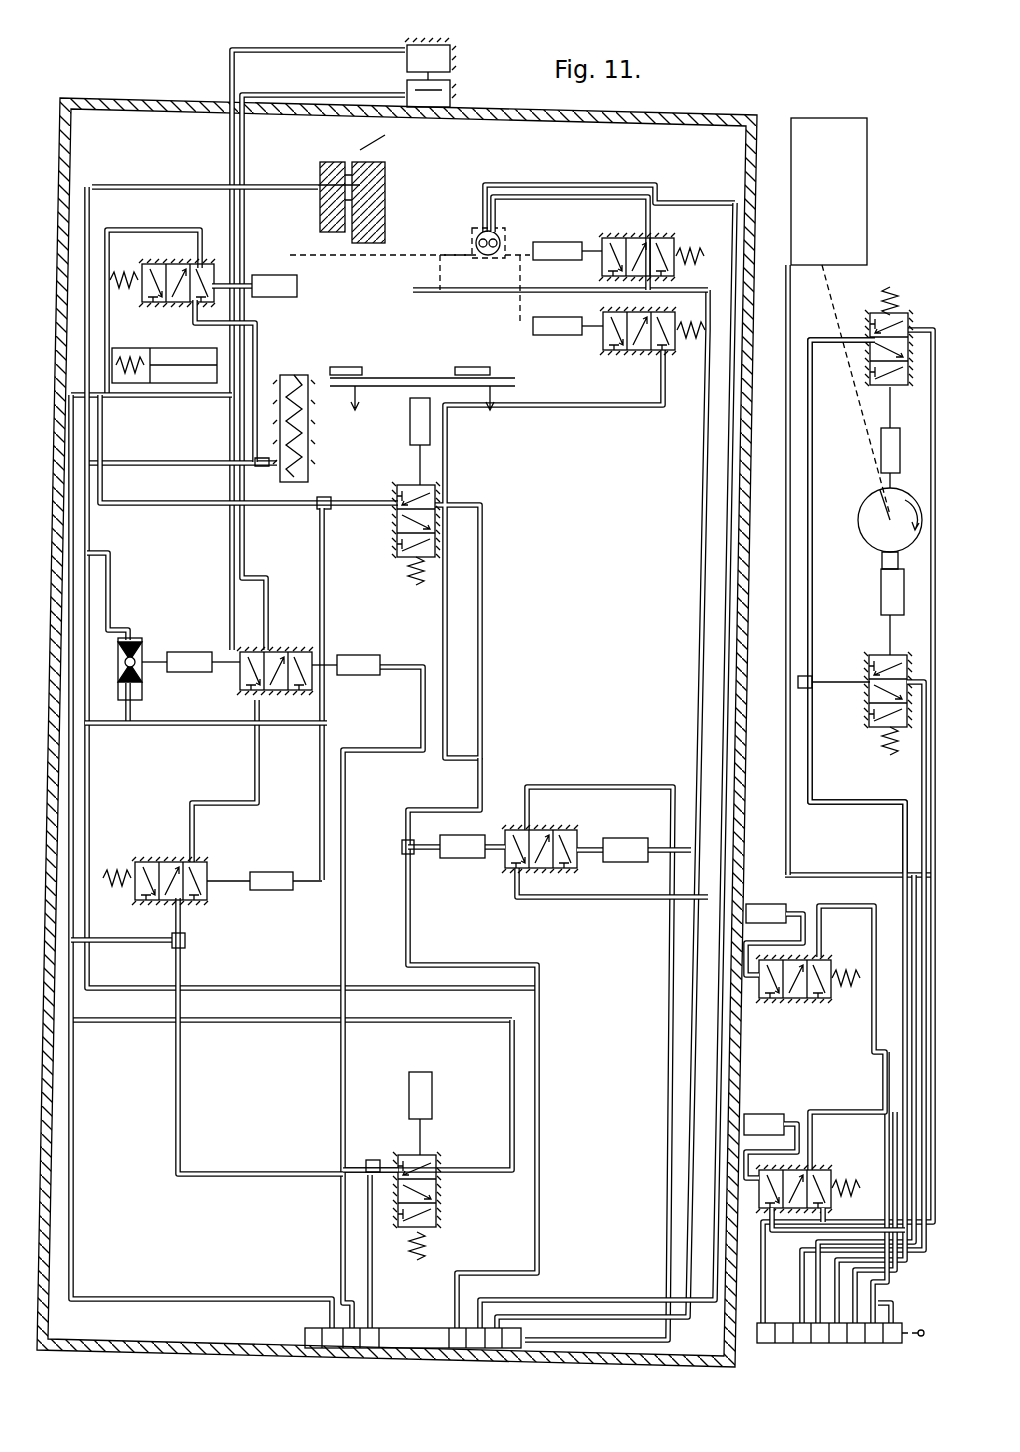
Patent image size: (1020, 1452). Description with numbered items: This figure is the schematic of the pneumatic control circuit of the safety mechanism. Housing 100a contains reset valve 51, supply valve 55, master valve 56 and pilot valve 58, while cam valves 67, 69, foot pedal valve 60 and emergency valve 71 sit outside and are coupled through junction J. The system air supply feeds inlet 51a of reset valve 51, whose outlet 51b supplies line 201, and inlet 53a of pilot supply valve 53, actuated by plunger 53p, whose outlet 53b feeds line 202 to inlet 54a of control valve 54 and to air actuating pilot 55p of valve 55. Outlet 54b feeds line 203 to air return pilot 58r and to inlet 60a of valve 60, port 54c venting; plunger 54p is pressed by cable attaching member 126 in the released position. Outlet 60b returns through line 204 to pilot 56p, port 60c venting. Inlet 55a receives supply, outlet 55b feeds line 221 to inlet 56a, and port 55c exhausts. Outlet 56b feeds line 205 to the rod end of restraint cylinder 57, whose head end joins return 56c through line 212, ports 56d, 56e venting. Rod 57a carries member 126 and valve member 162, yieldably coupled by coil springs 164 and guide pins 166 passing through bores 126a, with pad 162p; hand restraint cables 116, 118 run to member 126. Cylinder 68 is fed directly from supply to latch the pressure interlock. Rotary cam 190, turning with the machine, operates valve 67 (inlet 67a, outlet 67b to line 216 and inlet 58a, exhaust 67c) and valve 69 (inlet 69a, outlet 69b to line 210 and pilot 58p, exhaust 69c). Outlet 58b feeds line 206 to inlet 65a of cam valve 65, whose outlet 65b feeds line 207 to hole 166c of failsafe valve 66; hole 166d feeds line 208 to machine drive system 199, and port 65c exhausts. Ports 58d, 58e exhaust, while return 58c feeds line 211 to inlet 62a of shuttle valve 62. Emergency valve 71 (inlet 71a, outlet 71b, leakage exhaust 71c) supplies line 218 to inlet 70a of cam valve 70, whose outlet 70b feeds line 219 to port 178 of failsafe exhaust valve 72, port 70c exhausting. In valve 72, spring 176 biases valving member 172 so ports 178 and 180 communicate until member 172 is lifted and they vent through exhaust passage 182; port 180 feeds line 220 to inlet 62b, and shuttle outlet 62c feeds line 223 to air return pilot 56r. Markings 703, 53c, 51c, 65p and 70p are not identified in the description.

The housing 100a is at (120, 100).
The line 212 is at (290, 48).
The line 205 is at (268, 580).
The line 220 is at (128, 723).
The line 202 is at (322, 510).
The line 201 is at (440, 1030).
The line 223 is at (130, 650).
The line 211 is at (545, 960).
The line 204 is at (845, 906).
The line 221 is at (258, 790).
The line 218 is at (870, 1060).
The line 203 is at (830, 1050).
The line 216 is at (530, 1320).
The line 210 is at (605, 1320).
The line 207 is at (615, 185).
The line 208 is at (560, 1295).
The line 206 is at (590, 897).
The conduit 703 is at (760, 285).
The machine drive system 199 is at (860, 118).
The port 69c is at (862, 410).
The restraint cylinder 57 is at (452, 62).
The rod 57a is at (190, 360).
The pilot supply valve 53 is at (190, 265).
The inlet 53a is at (170, 360).
The outlet 53b is at (195, 266).
The valve port 53c is at (215, 300).
The plunger 53p is at (292, 275).
The failsafe exhaust valve 72 is at (320, 230).
The exhaust passage 182 is at (325, 162).
The valving member 172 is at (355, 165).
The spring 176 is at (360, 150).
The port 178 is at (375, 180).
The port 180 is at (320, 175).
The guide pin 166 is at (478, 235).
The hole 166c is at (484, 215).
The hole 166d is at (495, 230).
The failsafe valve 66 is at (500, 238).
The line 219 is at (510, 262).
The cable attaching member 126 is at (455, 292).
The bore 126a is at (515, 380).
The cam valve 65 is at (630, 238).
The cam pilot 65p is at (560, 242).
The inlet 65a is at (675, 262).
The outlet 65b is at (660, 238).
The port 65c is at (615, 276).
The cam valve 70 is at (678, 348).
The cam pilot 70p is at (565, 336).
The inlet 70a is at (655, 352).
The outlet 70b is at (660, 312).
The port 70c is at (635, 350).
The cylinder 68 is at (300, 372).
The valve member 162 is at (360, 350).
The coil spring 164 is at (370, 367).
The pad 162p is at (472, 367).
The plunger 54p is at (410, 412).
The cable 116 is at (395, 480).
The cable 118 is at (520, 480).
The control valve 54 is at (398, 552).
The inlet 54a is at (398, 520).
The outlet 54b is at (440, 500).
The port 54c is at (380, 503).
The shuttle valve 62 is at (135, 638).
The inlet 62a is at (125, 638).
The inlet 62b is at (135, 700).
The outlet 62c is at (150, 680).
The master valve 56 is at (245, 652).
The air return pilot 56r is at (190, 652).
The return 56c is at (250, 650).
The outlet 56b is at (280, 650).
The air actuating pilot 56p is at (358, 655).
The port 56d is at (250, 692).
The port 56e is at (300, 692).
The inlet 56a is at (250, 725).
The supply valve 55 is at (210, 870).
The outlet 55b is at (185, 862).
The air actuating pilot 55p is at (272, 872).
The inlet 55a is at (165, 900).
The port 55c is at (205, 905).
The pilot valve 58 is at (575, 830).
The air return pilot 58r is at (455, 835).
The air actuating pilot 58p is at (628, 838).
The port 58e is at (510, 828).
The inlet 58a is at (528, 828).
The port 58d is at (548, 828).
The outlet 58b is at (515, 870).
The return 58c is at (565, 870).
The reset valve 51 is at (440, 1160).
The valve port 51c is at (395, 1165).
The outlet 51b is at (440, 1168).
The inlet 51a is at (395, 1185).
The junction J is at (409, 1320).
The cam valve 69 is at (895, 310).
The inlet 69a is at (872, 330).
The outlet 69b is at (908, 330).
The rotary cam 190 is at (870, 505).
The cam valve 67 is at (870, 660).
The port 67c is at (868, 665).
The outlet 67b is at (900, 655).
The inlet 67a is at (868, 690).
The foot pedal valve 60 is at (785, 998).
The outlet 60b is at (800, 960).
The port 60c is at (810, 1000).
The inlet 60a is at (812, 1000).
The emergency valve 71 is at (820, 1170).
The outlet 71b is at (805, 1170).
The inlet 71a is at (826, 1210).
The port 71c is at (775, 1212).